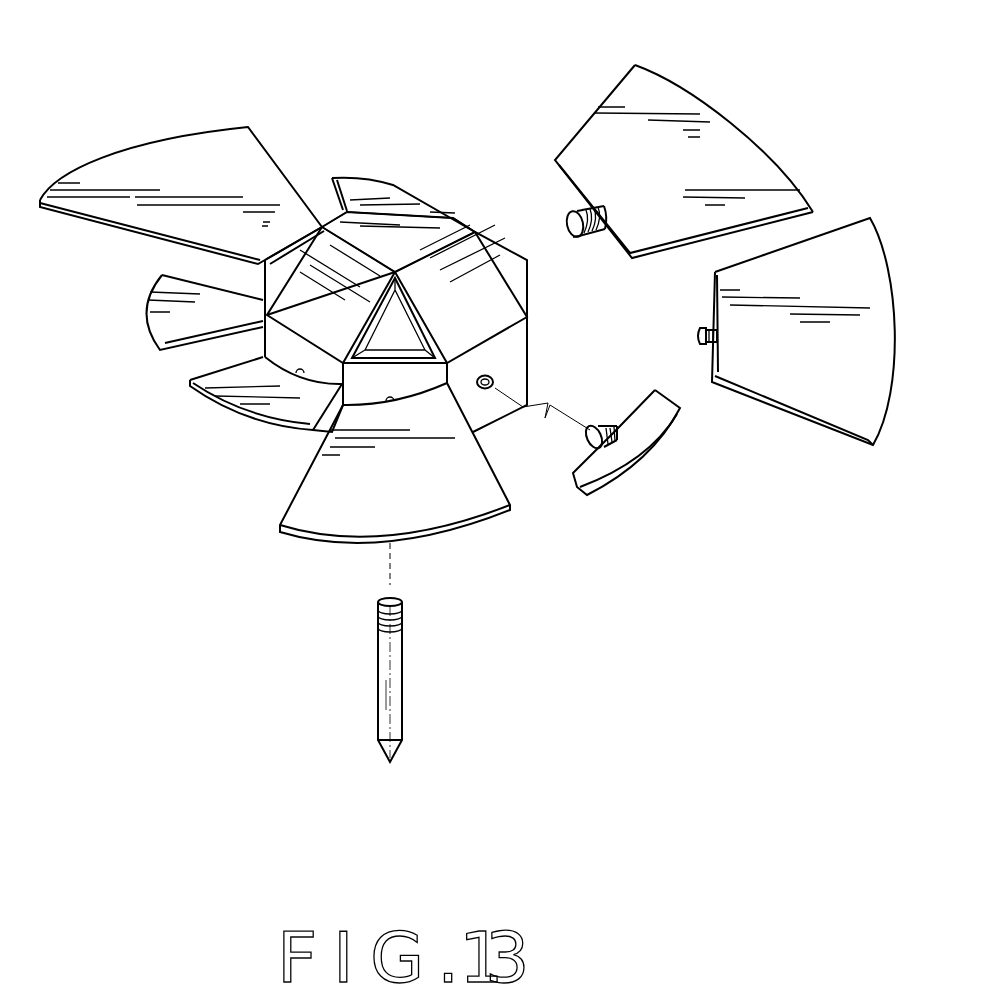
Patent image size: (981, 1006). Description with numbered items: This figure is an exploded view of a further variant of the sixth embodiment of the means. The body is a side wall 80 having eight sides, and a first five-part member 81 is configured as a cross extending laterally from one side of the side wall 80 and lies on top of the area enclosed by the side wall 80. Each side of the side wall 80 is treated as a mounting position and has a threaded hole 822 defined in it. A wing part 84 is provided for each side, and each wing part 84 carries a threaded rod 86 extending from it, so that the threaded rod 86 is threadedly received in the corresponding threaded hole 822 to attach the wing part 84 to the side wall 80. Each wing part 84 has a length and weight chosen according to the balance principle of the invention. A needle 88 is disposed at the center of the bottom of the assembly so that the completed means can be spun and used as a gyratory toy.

The side wall 80 is at (508, 418).
The first five-part member 81 is at (397, 240).
The threaded hole 822 is at (495, 382).
The wing part 84 is at (697, 103).
The threaded rod 86 is at (568, 213).
The needle 88 is at (400, 690).